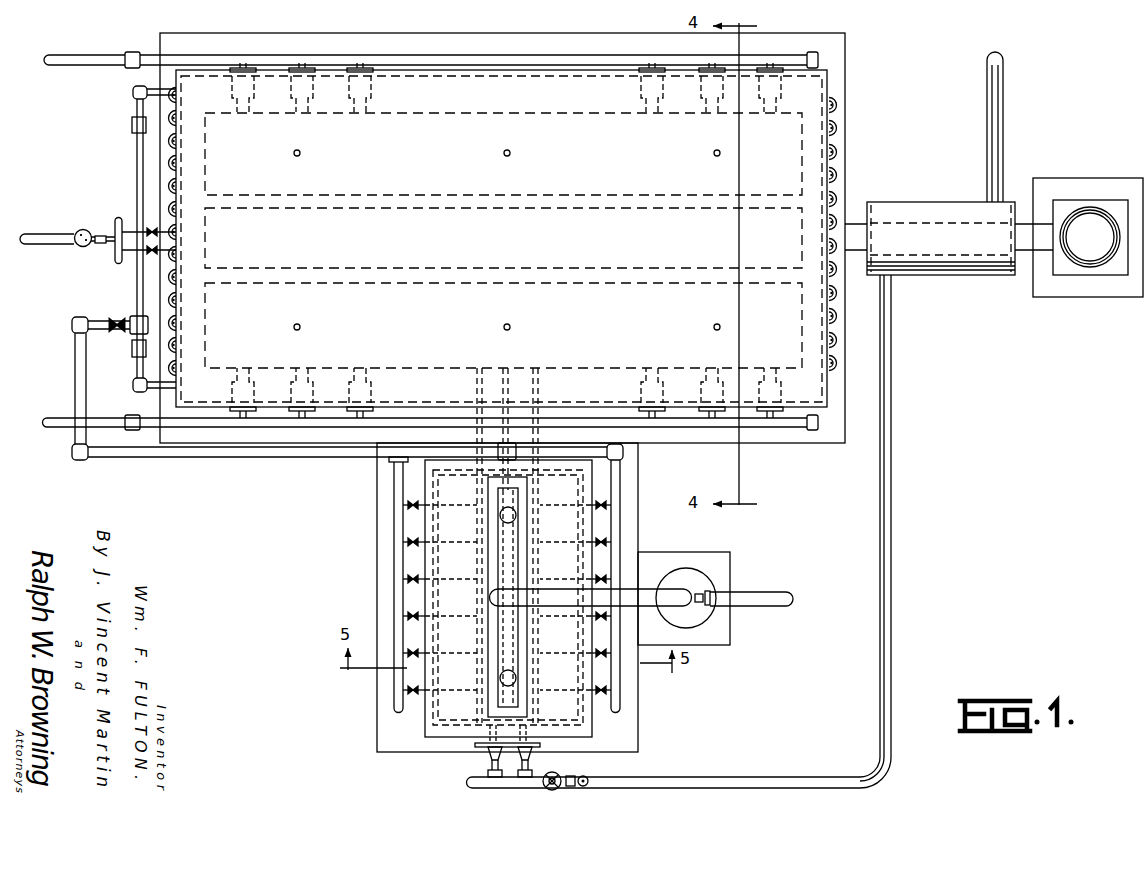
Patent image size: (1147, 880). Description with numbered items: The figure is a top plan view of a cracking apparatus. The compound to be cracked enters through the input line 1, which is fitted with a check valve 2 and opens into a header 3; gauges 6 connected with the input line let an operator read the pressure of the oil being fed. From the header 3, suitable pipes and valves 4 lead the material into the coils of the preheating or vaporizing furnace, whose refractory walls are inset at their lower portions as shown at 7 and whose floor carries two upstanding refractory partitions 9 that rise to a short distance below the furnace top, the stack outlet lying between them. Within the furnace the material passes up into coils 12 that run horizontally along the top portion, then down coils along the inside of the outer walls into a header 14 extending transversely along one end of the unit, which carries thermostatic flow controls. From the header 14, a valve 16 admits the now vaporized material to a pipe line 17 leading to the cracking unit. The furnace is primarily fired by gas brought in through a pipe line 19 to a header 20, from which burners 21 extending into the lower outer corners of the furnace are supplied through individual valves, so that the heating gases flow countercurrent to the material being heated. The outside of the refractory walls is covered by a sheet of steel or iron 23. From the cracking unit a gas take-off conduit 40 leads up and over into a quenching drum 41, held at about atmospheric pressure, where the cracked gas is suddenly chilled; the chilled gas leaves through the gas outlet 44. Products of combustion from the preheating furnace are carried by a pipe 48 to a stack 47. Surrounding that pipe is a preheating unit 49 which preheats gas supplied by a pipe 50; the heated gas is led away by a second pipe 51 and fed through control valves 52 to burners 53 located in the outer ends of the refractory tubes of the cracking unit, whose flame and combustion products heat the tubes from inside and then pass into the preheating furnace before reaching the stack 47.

The input line 1 is at (33, 240).
The check valve 2 is at (90, 228).
The header 3 is at (115, 250).
The valves 4 is at (150, 227).
The gauges 6 is at (103, 233).
The inset wall portions 7 is at (587, 383).
The upstanding partitions 9 is at (620, 202).
The coils 12 is at (165, 185).
The header 14 is at (138, 180).
The valve 16 is at (105, 330).
The pipe line 17 is at (226, 458).
The pipe line 19 is at (87, 63).
The header 20 is at (565, 55).
The burners 21 is at (253, 72).
The sheet of steel or iron 23 is at (820, 418).
The gas take-off conduit 40 is at (648, 593).
The quenching drum 41 is at (694, 575).
The gas outlet 44 is at (768, 598).
The stack 47 is at (1090, 257).
The pipe 48 is at (1024, 228).
The preheating unit 49 is at (928, 212).
The pipe 50 is at (1002, 121).
The second pipe 51 is at (893, 452).
The control valves 52 is at (565, 776).
The burners 53 is at (490, 760).